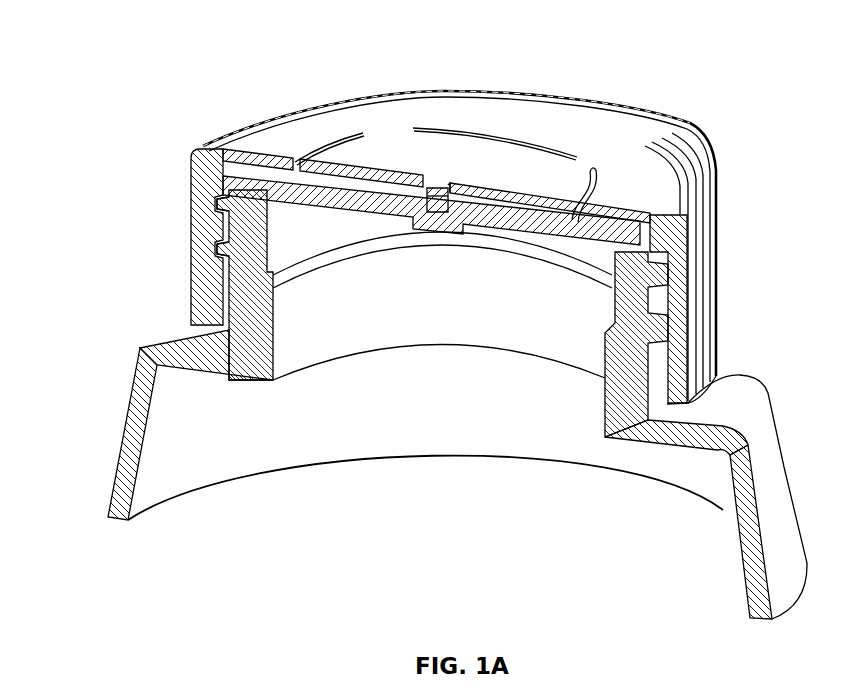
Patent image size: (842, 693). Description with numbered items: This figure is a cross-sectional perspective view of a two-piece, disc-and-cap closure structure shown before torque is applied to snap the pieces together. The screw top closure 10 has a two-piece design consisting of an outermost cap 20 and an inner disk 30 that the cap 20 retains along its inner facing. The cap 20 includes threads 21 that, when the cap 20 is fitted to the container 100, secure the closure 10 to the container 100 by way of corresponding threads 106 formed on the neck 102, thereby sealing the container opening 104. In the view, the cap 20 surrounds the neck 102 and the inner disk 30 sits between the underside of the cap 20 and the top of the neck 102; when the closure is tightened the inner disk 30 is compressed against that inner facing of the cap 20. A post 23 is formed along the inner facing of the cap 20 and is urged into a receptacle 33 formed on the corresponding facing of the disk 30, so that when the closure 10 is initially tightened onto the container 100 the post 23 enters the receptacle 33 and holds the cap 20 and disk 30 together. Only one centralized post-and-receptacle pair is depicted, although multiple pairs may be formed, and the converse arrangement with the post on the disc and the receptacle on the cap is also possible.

The screw top closure 10 is at (112, 42).
The cap 20 is at (630, 155).
The threads 21 is at (668, 300).
The post 23 is at (440, 212).
The inner disk 30 is at (192, 152).
The receptacle 33 is at (434, 208).
The container 100 is at (742, 542).
The neck 102 is at (224, 344).
The container opening 104 is at (420, 358).
The threads 106 is at (222, 208).